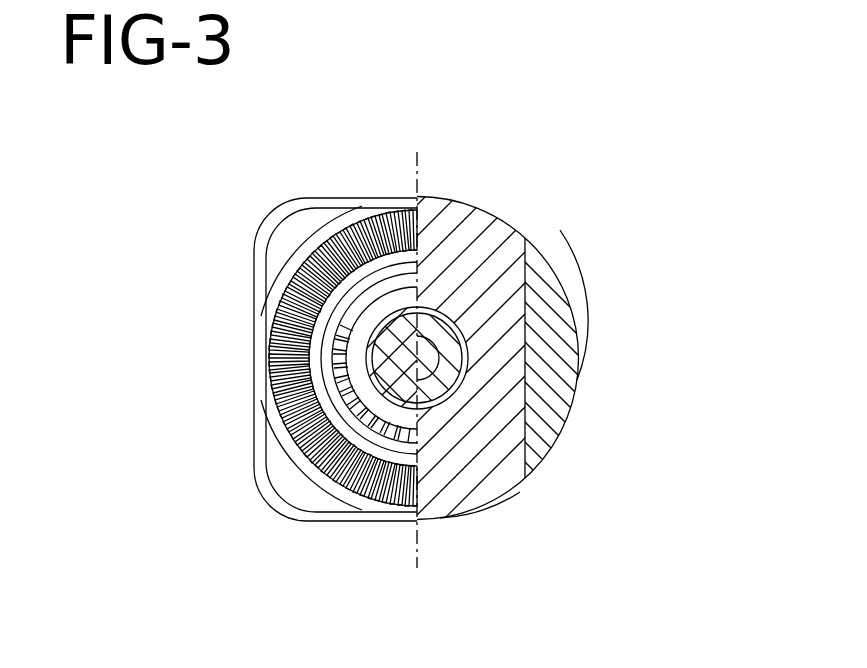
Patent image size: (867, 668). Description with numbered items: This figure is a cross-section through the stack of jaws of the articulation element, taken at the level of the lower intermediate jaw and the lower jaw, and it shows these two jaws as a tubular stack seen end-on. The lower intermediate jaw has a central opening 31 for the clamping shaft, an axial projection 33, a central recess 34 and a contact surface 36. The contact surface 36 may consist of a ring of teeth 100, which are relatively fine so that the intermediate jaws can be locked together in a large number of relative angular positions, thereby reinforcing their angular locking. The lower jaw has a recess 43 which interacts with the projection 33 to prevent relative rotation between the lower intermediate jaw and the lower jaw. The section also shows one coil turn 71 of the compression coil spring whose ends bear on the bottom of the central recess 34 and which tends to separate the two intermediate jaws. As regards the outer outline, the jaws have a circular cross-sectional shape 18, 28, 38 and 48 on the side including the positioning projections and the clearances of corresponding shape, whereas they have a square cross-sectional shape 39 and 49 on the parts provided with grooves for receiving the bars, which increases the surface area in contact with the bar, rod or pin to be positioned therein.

The circular cross-sectional shape 18 is at (320, 470).
The circular cross-sectional shape 28 is at (419, 396).
The central opening 31 is at (266, 289).
The axial projection 33 is at (557, 293).
The central recess 34 is at (330, 380).
The contact surface 36 is at (303, 417).
The circular cross-sectional shape 38 is at (586, 398).
The square cross-sectional shape 39 is at (323, 199).
The recess 43 is at (523, 262).
The circular cross-sectional shape 48 is at (503, 505).
The square cross-sectional shape 49 is at (328, 318).
The coil turn 71 is at (308, 450).
The ring of teeth 100 is at (315, 250).